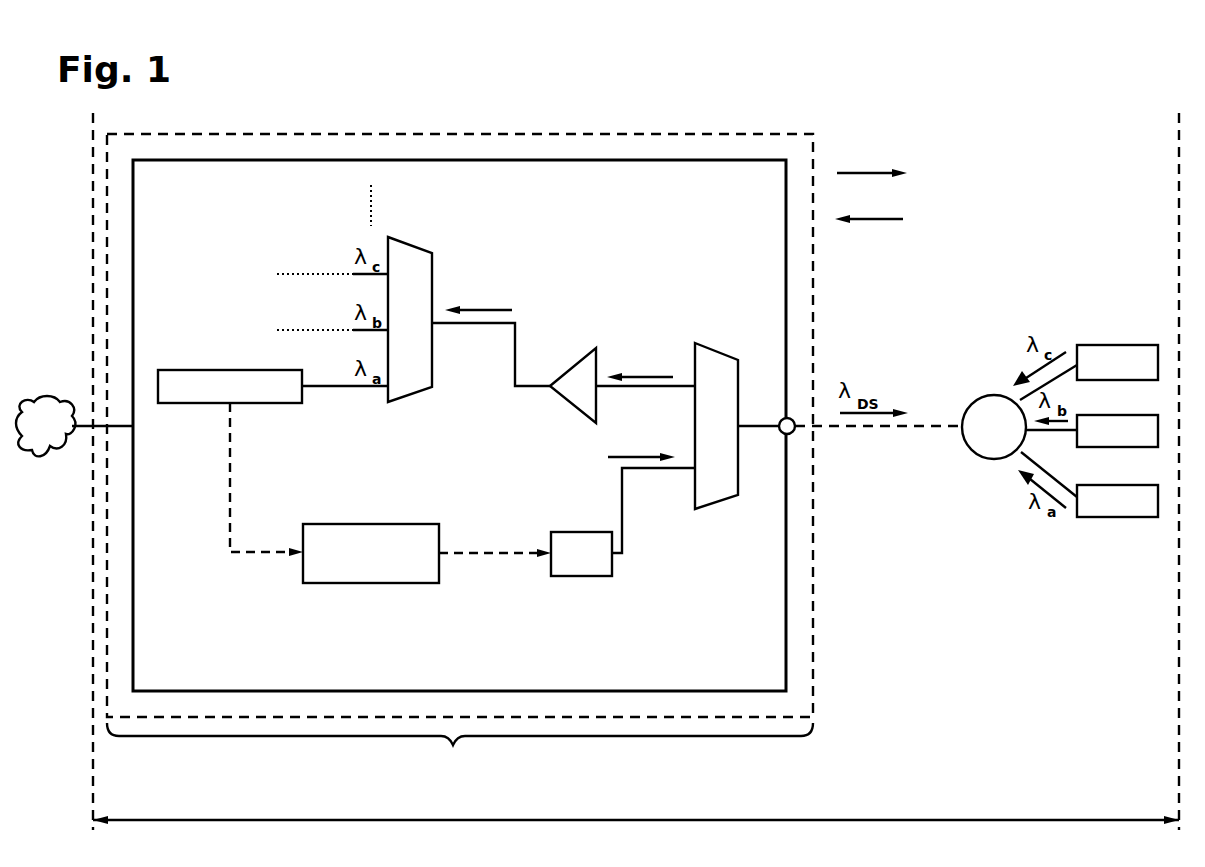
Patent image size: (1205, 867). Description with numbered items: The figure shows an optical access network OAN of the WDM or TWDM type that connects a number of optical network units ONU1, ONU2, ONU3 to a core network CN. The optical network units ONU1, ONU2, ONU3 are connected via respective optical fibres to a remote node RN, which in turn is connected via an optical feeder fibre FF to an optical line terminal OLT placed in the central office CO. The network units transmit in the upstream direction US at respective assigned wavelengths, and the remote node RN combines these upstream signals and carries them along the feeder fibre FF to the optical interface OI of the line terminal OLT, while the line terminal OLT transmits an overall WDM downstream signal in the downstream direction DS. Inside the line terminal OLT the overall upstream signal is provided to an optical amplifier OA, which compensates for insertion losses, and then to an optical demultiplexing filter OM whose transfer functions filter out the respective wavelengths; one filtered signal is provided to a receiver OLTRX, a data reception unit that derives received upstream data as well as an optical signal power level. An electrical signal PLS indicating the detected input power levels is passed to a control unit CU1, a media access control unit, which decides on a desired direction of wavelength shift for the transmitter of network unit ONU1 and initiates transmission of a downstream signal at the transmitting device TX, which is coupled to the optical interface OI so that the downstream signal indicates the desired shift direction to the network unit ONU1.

The optical access network OAN is at (953, 820).
The central office CO is at (460, 456).
The optical line terminal OLT is at (786, 630).
The core network CN is at (74, 426).
The receiver OLTRX is at (273, 386).
The optical demultiplexing filter OM is at (432, 273).
The optical amplifier OA is at (574, 365).
The transmitting device TX is at (623, 522).
The control unit CU1 is at (407, 583).
The electrical signal PLS is at (268, 556).
The optical interface OI is at (795, 433).
The optical feeder fibre FF is at (933, 429).
The remote node RN is at (998, 395).
The optical network unit ONU1 is at (1088, 484).
The optical network unit ONU2 is at (1092, 431).
The optical network unit ONU3 is at (1085, 372).
The upstream direction US is at (674, 288).
The downstream direction DS is at (757, 305).